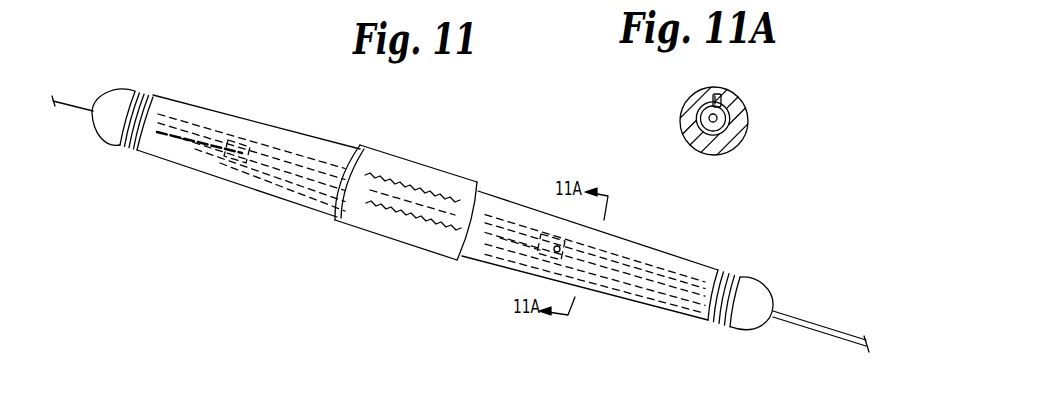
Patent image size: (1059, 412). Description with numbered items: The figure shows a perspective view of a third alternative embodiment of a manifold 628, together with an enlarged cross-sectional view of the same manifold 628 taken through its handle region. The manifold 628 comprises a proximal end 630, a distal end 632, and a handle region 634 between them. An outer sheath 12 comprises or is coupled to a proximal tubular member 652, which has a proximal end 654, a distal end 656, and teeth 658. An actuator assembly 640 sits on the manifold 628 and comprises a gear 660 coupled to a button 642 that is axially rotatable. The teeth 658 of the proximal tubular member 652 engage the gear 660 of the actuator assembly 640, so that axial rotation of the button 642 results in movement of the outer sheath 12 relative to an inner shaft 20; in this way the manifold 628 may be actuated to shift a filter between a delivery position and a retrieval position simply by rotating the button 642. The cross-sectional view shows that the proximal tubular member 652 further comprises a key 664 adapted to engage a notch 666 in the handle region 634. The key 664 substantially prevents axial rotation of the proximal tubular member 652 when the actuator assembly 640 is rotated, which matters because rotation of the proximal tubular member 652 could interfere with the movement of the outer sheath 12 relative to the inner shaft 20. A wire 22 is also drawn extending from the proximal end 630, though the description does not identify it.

In FIG. 11, the outer sheath 12 is at (808, 330).
In FIG. 11, the inner shaft 20 is at (194, 142).
In FIG. 11, the distal wire 22 is at (78, 107).
In FIG. 11, the manifold 628 is at (236, 117).
In FIG. 11, the proximal end 630 is at (104, 133).
In FIG. 11, the distal end 632 is at (742, 320).
In FIG. 11, the handle region 634 is at (276, 197).
In FIG. 11A, the handle region 634 is at (731, 150).
In FIG. 11, the actuator assembly 640 is at (457, 178).
In FIG. 11, the button 642 is at (421, 165).
In FIG. 11, the proximal tubular member 652 is at (494, 243).
In FIG. 11A, the proximal tubular member 652 is at (722, 119).
In FIG. 11, the proximal end 654 is at (220, 177).
In FIG. 11, the distal end 656 is at (523, 270).
In FIG. 11, the teeth 658 is at (428, 182).
In FIG. 11, the gear 660 is at (390, 170).
In FIG. 11A, the key 664 is at (727, 100).
In FIG. 11A, the notch 666 is at (715, 93).